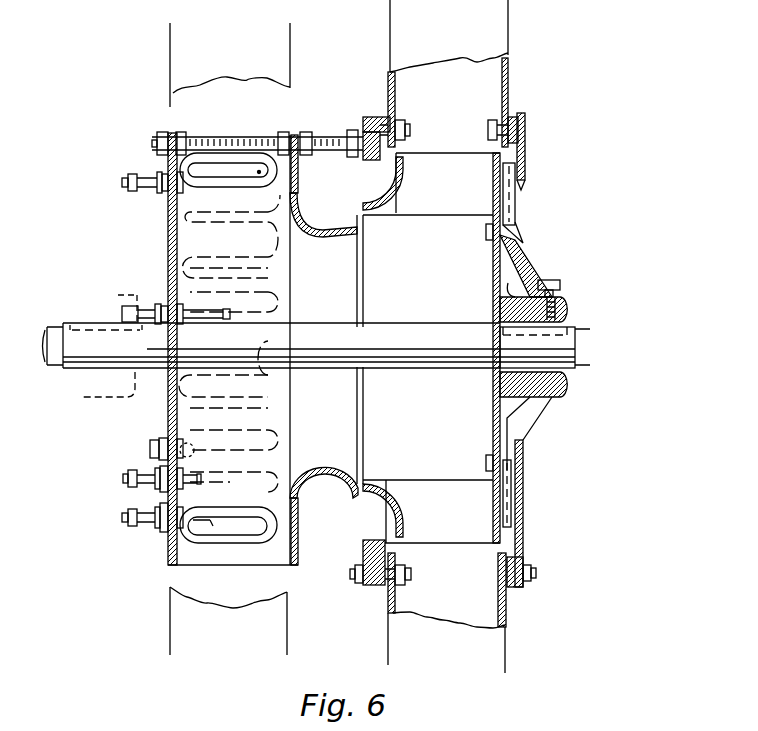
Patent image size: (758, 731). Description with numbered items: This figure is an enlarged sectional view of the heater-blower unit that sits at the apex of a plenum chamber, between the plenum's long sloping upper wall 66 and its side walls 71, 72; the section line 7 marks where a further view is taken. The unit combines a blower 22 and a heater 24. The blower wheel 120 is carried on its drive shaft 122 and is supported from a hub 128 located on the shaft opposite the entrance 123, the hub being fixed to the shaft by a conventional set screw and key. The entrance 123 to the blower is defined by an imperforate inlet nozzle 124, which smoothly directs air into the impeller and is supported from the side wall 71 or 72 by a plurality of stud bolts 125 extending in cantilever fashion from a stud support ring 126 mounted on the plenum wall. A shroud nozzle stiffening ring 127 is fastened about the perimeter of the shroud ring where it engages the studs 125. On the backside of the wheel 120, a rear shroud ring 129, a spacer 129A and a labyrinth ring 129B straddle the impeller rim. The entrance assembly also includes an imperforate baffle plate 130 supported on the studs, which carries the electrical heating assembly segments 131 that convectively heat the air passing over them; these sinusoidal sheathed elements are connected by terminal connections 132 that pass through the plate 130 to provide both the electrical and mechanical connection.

The section line 7- 7 is at (40, 37).
The blower 22 is at (437, 415).
The heater 24 is at (248, 553).
The upper wall 66 is at (292, 36).
The side wall 71 is at (380, 92).
The side wall 72 is at (501, 80).
The blower wheel 120 is at (457, 146).
The drive shaft 122 is at (373, 327).
The entrance 123 is at (334, 303).
The inlet nozzle 124 is at (323, 473).
The stud bolts 125 is at (227, 137).
The stud support ring 126 is at (380, 110).
The shroud nozzle stiffening ring 127 is at (302, 133).
The hub 128 is at (117, 293).
The rear shroud ring 129 is at (527, 137).
The spacer 129A is at (520, 117).
The labyrinth ring 129B is at (525, 172).
The baffle plate 130 is at (168, 243).
The electrical heating assembly segments 131 is at (268, 280).
The terminal connections 132 is at (141, 184).